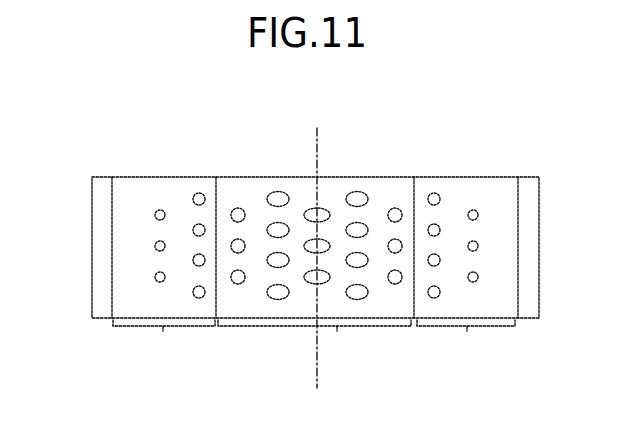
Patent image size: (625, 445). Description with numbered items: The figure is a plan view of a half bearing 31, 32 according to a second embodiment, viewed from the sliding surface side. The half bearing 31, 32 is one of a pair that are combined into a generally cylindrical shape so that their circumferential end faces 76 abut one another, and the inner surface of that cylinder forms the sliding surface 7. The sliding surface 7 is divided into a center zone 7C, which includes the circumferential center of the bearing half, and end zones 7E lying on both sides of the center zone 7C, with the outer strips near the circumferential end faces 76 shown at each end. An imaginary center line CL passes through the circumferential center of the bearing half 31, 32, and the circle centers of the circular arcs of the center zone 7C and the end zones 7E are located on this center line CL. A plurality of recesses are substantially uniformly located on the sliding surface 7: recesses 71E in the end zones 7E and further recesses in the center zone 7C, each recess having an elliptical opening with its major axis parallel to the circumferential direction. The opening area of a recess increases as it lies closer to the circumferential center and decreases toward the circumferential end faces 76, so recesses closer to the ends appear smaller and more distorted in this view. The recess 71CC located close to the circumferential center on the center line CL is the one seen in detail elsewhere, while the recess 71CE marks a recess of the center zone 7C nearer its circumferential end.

The sliding surface 7 is at (315, 250).
The center zone 7C is at (314, 279).
The end zones 7E is at (314, 342).
The half bearing 31 is at (315, 205).
The half bearing 32 is at (453, 190).
The recess 71CC is at (313, 284).
The end hole of central portion 71CE is at (390, 209).
The recesses 71E is at (157, 212).
The circumferential end faces 76 is at (106, 267).
The center line CL is at (312, 155).